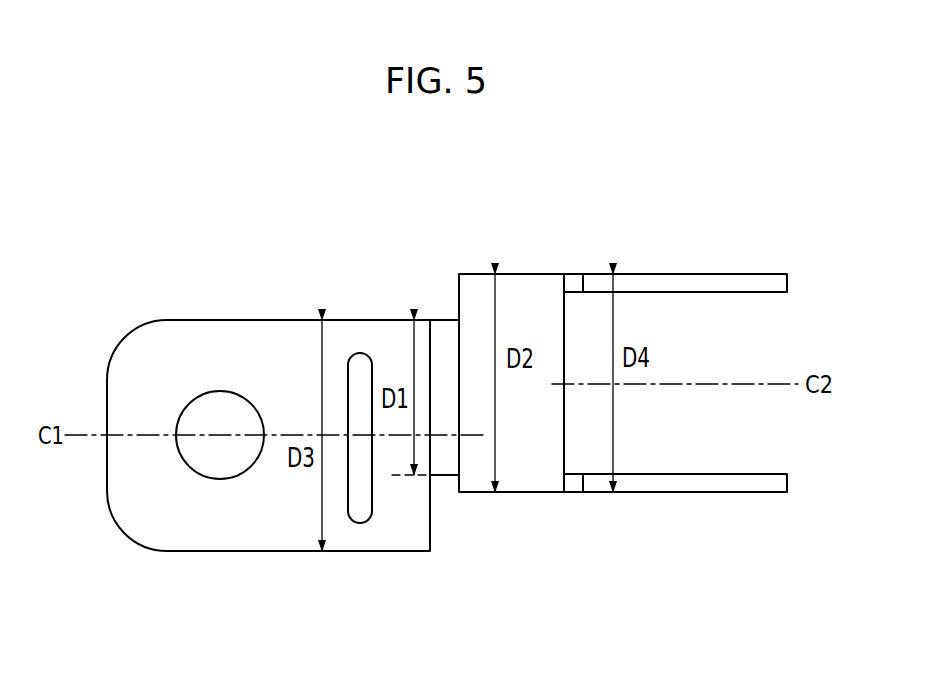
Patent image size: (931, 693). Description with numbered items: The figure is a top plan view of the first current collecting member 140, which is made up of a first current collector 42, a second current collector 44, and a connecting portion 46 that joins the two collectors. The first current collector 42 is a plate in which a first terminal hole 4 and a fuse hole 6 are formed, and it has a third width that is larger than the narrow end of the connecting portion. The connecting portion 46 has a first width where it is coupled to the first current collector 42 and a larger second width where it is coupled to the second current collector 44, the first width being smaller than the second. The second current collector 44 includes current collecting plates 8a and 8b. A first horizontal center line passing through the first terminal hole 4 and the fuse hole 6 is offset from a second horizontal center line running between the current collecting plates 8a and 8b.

The first current collecting member 140 is at (459, 222).
The first current collector 42 is at (413, 551).
The first terminal hole 4 is at (217, 470).
The fuse hole 6 is at (362, 517).
The connecting portion 46 is at (443, 475).
The second current collector 44 is at (675, 454).
The current collecting plate 8a is at (643, 487).
The current collecting plate 8b is at (726, 287).